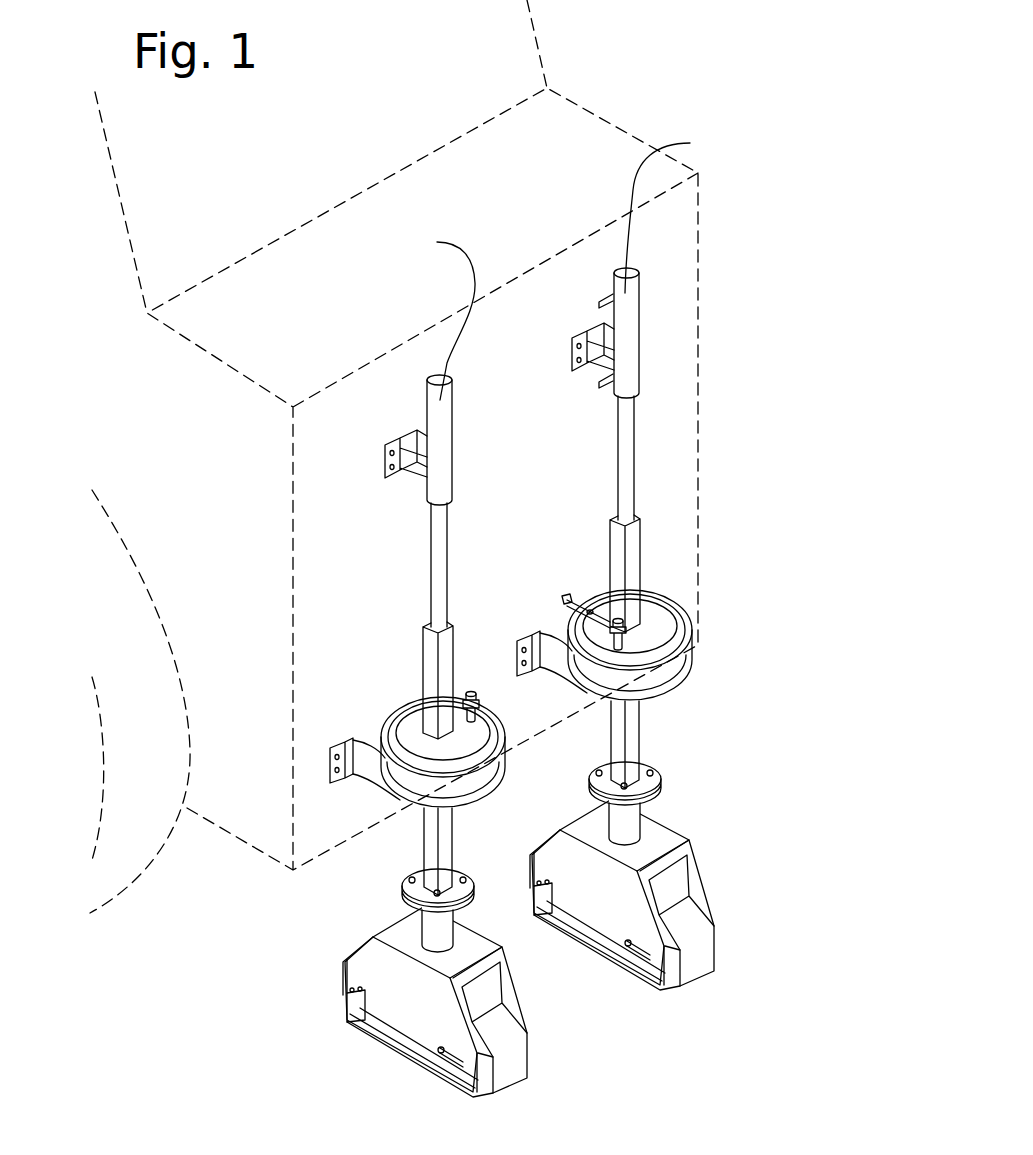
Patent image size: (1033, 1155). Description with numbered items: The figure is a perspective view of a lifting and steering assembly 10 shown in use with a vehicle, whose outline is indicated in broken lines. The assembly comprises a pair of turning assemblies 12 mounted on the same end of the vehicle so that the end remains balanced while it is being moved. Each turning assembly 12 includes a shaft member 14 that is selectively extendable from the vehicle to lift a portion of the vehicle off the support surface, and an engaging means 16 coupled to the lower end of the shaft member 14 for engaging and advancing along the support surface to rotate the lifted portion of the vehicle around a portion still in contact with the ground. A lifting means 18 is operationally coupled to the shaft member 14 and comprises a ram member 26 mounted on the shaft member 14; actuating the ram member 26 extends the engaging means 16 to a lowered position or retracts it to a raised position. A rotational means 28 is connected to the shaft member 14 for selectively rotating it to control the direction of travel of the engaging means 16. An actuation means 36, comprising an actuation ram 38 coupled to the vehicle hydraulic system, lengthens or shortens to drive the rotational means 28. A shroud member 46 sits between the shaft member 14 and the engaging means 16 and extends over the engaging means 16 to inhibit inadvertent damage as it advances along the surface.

The lifting and steering assembly 10 is at (673, 1055).
The turning assembly 12 is at (372, 866).
The shaft member 14 is at (430, 648).
The engaging means 16 is at (412, 1077).
The lifting means 18 is at (398, 381).
The ram member 26 is at (437, 242).
The rotational means 28 is at (377, 695).
The actuation means 36 is at (583, 575).
The actuation ram 38 is at (570, 607).
The shroud member 46 is at (397, 997).